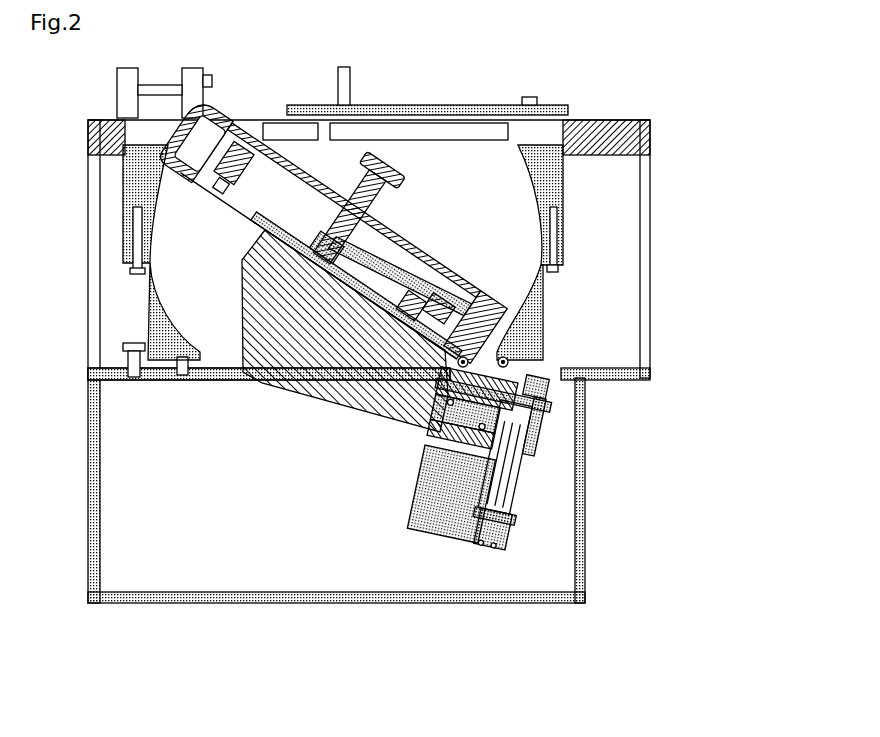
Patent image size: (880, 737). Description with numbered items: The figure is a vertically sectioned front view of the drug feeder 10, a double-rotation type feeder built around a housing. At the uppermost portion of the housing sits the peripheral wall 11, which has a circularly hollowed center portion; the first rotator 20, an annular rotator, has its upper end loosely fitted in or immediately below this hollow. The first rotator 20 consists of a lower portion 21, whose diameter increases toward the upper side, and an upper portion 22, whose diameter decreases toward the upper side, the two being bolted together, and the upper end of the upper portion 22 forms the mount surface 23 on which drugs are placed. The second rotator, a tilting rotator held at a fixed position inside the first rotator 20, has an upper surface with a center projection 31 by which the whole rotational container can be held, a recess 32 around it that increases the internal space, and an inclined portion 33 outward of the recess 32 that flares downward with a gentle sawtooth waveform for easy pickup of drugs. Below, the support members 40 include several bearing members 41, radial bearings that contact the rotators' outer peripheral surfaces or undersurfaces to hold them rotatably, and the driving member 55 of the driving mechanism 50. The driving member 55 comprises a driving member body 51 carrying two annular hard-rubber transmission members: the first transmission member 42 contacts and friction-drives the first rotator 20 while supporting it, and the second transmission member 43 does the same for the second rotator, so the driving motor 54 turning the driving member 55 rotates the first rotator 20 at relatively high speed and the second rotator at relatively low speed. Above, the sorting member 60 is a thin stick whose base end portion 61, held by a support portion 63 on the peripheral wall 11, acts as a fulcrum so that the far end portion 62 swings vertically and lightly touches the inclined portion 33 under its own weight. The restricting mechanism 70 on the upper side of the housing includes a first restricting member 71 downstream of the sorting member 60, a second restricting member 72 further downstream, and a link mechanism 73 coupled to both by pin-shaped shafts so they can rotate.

The drug feeder 10 is at (658, 470).
The peripheral wall 11 is at (88, 133).
The first rotator 20 is at (386, 218).
The lower portion 21 is at (147, 300).
The upper portion 22 is at (125, 191).
The mount surface 23 is at (90, 128).
The center projection 31 is at (398, 183).
The recess 32 is at (387, 245).
The inclined portion 33 is at (205, 118).
The support members 40 is at (340, 326).
The bearing members 41 is at (217, 186).
The first transmission member 42 is at (468, 425).
The second transmission member 43 is at (420, 415).
The driving mechanism 50 is at (399, 471).
The driving member body 51 is at (440, 398).
The driving motor 54 is at (415, 504).
The driving member 55 is at (342, 522).
The sorting member 60 is at (182, 81).
The base end portion 61 is at (190, 72).
The far end portion 62 is at (198, 110).
The support portion 63 is at (115, 97).
The restricting mechanism 70 is at (415, 98).
The first restricting member 71 is at (323, 112).
The second restricting member 72 is at (395, 130).
The link mechanism 73 is at (503, 103).